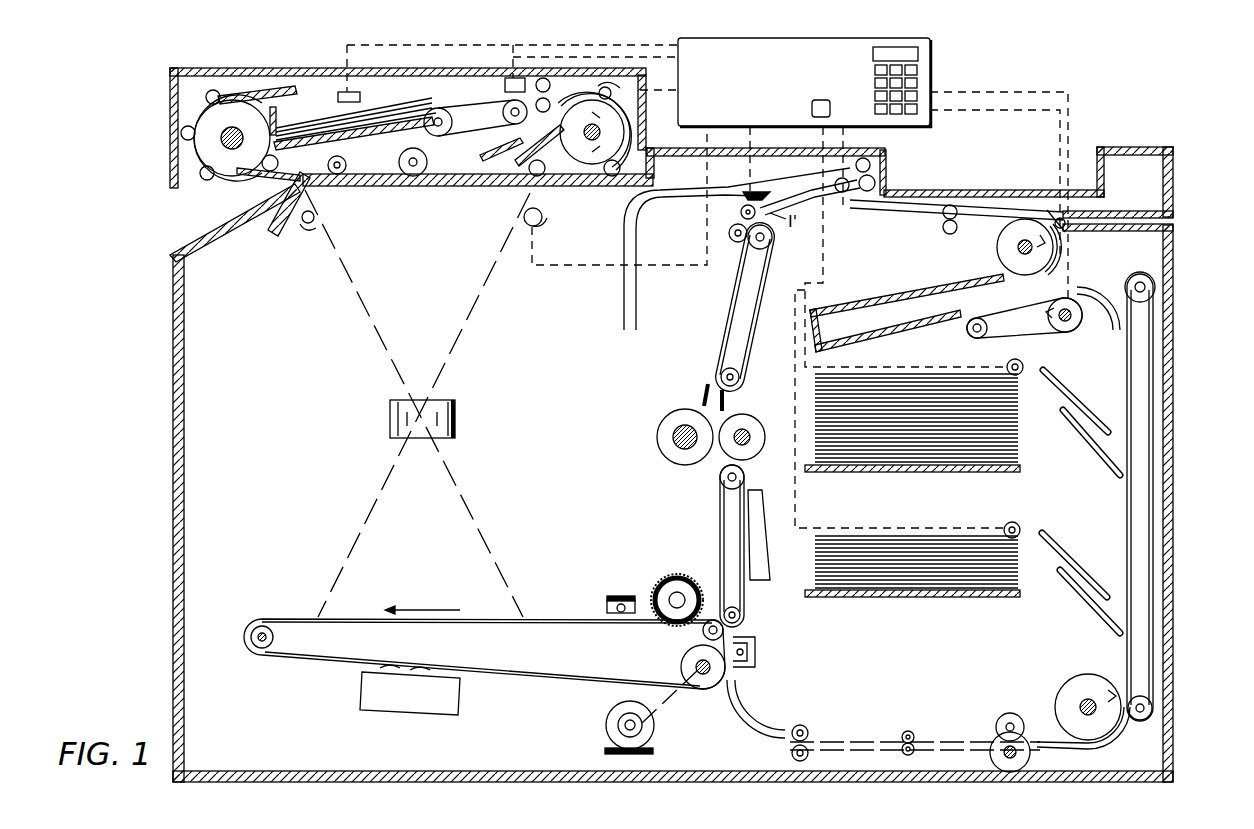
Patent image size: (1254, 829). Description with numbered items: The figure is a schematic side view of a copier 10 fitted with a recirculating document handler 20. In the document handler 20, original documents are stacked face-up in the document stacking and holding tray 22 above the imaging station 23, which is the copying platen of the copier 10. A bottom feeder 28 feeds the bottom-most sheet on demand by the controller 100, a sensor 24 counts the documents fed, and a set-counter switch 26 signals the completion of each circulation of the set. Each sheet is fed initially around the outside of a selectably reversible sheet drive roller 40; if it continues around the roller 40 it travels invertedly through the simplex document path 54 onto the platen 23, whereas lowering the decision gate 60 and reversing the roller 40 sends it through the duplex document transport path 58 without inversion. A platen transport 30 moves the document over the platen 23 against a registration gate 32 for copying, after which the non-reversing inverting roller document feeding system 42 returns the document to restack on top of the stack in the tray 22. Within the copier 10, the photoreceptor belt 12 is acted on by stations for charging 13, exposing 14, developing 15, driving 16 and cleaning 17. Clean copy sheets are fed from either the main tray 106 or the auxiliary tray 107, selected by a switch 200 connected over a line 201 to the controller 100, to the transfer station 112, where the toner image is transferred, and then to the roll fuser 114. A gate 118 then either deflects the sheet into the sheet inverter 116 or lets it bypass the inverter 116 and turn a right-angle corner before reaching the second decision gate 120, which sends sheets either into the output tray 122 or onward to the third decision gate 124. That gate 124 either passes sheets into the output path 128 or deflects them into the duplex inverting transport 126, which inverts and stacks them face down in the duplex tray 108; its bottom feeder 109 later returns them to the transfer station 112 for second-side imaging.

The copier 10 is at (1104, 118).
The photoreceptor belt 12 is at (287, 617).
The charging station 13 is at (619, 597).
The exposing station 14 is at (473, 596).
The developing station 15 is at (458, 705).
The driving station 16 is at (657, 720).
The cleaning station 17 is at (703, 565).
The recirculating document handler 20 is at (164, 162).
The document stacking and holding tray 22 is at (337, 137).
The imaging station 23 is at (420, 188).
The sensor 24 is at (510, 78).
The set-counter switch 26 is at (360, 97).
The bottom feeder 28 is at (447, 137).
The platen transport 30 is at (343, 163).
The registration gate 32 is at (283, 235).
The reversible sheet drive roller 40 is at (636, 127).
The inverting roller document feeding system 42 is at (225, 178).
The simplex document path 54 is at (597, 188).
The duplex document transport path 58 is at (522, 136).
The decision gate 60 is at (634, 97).
The controller 100 is at (930, 57).
The main tray 106 is at (958, 480).
The auxiliary tray 107 is at (962, 603).
The duplex tray 108 is at (860, 348).
The bottom feeder 109 is at (1050, 333).
The transfer station 112 is at (757, 640).
The roll fuser 114 is at (707, 463).
The sheet inverter 116 is at (693, 203).
The gate 118 is at (768, 228).
The second decision gate 120 is at (845, 208).
The output tray 122 is at (972, 188).
The third decision gate 124 is at (1066, 228).
The duplex inverting transport 126 is at (1058, 268).
The output path 128 is at (1181, 216).
The switch 200 is at (830, 108).
The line 201 is at (794, 330).